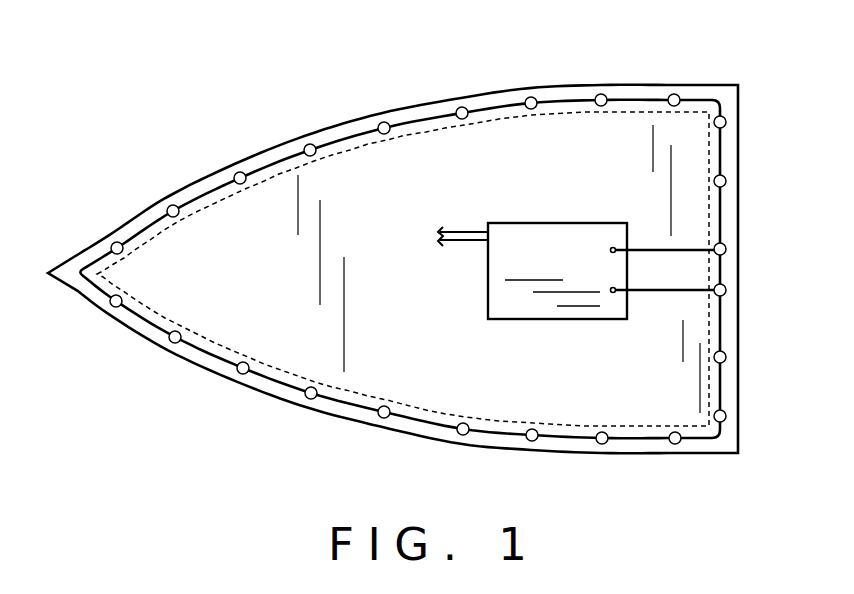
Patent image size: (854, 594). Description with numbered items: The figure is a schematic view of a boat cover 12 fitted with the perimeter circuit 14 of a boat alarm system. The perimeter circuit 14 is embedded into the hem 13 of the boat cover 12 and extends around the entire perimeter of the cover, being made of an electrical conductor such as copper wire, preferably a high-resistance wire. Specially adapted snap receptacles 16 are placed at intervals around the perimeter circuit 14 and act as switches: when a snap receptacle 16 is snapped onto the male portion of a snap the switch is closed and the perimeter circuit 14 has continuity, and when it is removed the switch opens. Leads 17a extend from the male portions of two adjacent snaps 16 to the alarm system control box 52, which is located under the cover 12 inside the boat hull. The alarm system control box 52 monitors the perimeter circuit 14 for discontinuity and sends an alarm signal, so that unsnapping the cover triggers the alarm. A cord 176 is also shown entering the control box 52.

The boat cover 12 is at (265, 232).
The hem 13 is at (356, 128).
The perimeter circuit 14 is at (347, 404).
The snap receptacles 16 is at (601, 95).
The leads 17a is at (690, 286).
The alarm system control box 52 is at (584, 223).
The power cord 176 is at (463, 240).